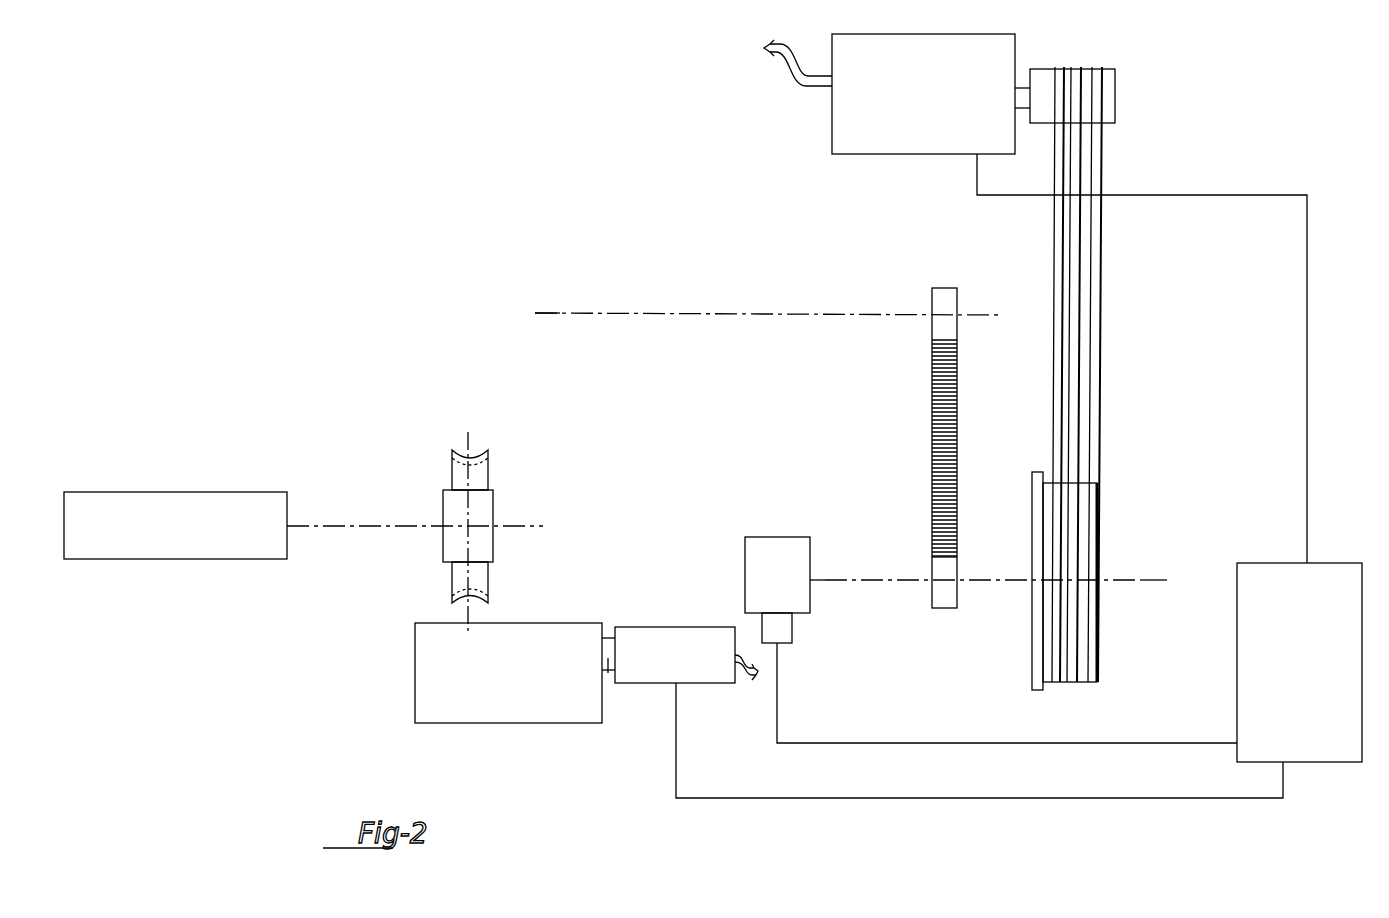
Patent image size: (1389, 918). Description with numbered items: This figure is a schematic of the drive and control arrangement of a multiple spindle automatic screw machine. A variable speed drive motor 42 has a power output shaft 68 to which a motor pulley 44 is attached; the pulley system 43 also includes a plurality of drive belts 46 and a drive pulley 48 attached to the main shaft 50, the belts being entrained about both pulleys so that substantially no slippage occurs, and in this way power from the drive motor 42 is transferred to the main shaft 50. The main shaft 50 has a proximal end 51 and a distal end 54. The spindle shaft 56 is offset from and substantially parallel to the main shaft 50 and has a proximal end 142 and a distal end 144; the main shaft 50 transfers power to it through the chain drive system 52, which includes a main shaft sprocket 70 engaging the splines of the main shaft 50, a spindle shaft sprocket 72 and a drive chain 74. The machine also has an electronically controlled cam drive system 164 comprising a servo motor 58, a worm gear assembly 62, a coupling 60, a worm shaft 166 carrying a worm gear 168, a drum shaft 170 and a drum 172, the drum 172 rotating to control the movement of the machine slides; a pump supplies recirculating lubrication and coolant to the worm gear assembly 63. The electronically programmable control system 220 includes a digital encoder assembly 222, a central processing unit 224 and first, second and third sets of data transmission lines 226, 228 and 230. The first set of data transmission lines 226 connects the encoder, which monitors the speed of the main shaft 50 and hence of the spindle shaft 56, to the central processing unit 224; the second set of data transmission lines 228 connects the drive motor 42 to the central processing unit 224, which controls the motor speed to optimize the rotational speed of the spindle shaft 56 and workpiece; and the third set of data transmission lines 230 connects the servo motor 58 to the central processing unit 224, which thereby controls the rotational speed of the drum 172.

The drive motor 42 is at (904, 117).
The pulley system 43 is at (1138, 359).
The motor pulley 44 is at (1108, 98).
The drive belts 46 is at (1100, 395).
The drive pulley 48 is at (1098, 557).
The main shaft 50 is at (1138, 582).
The proximal end 51 is at (1132, 595).
The chain drive system 52 is at (910, 444).
The distal end 54 is at (837, 565).
The spindle shaft 56 is at (713, 313).
The servo motor 58 is at (670, 647).
The coupling 60 is at (608, 673).
The worm gear assembly 62 is at (432, 700).
The worm gear assembly 63 is at (476, 521).
The power output shaft 68 is at (1022, 88).
The main shaft sprocket 70 is at (942, 590).
The spindle shaft sprocket 72 is at (948, 302).
The drive chain 74 is at (945, 438).
The proximal end 142 is at (922, 444).
The distal end 144 is at (642, 313).
The cam drive system 164 is at (507, 521).
The worm shaft 166 is at (470, 443).
The worm gear 168 is at (482, 510).
The drum shaft 170 is at (408, 524).
The drum 172 is at (152, 540).
The control system 220 is at (979, 776).
The digital encoder assembly 222 is at (737, 567).
The central processing unit 224 is at (1305, 702).
The first set of data transmission lines 226 is at (995, 743).
The second set of data transmission lines 228 is at (1222, 195).
The third set of data transmission lines 230 is at (897, 799).